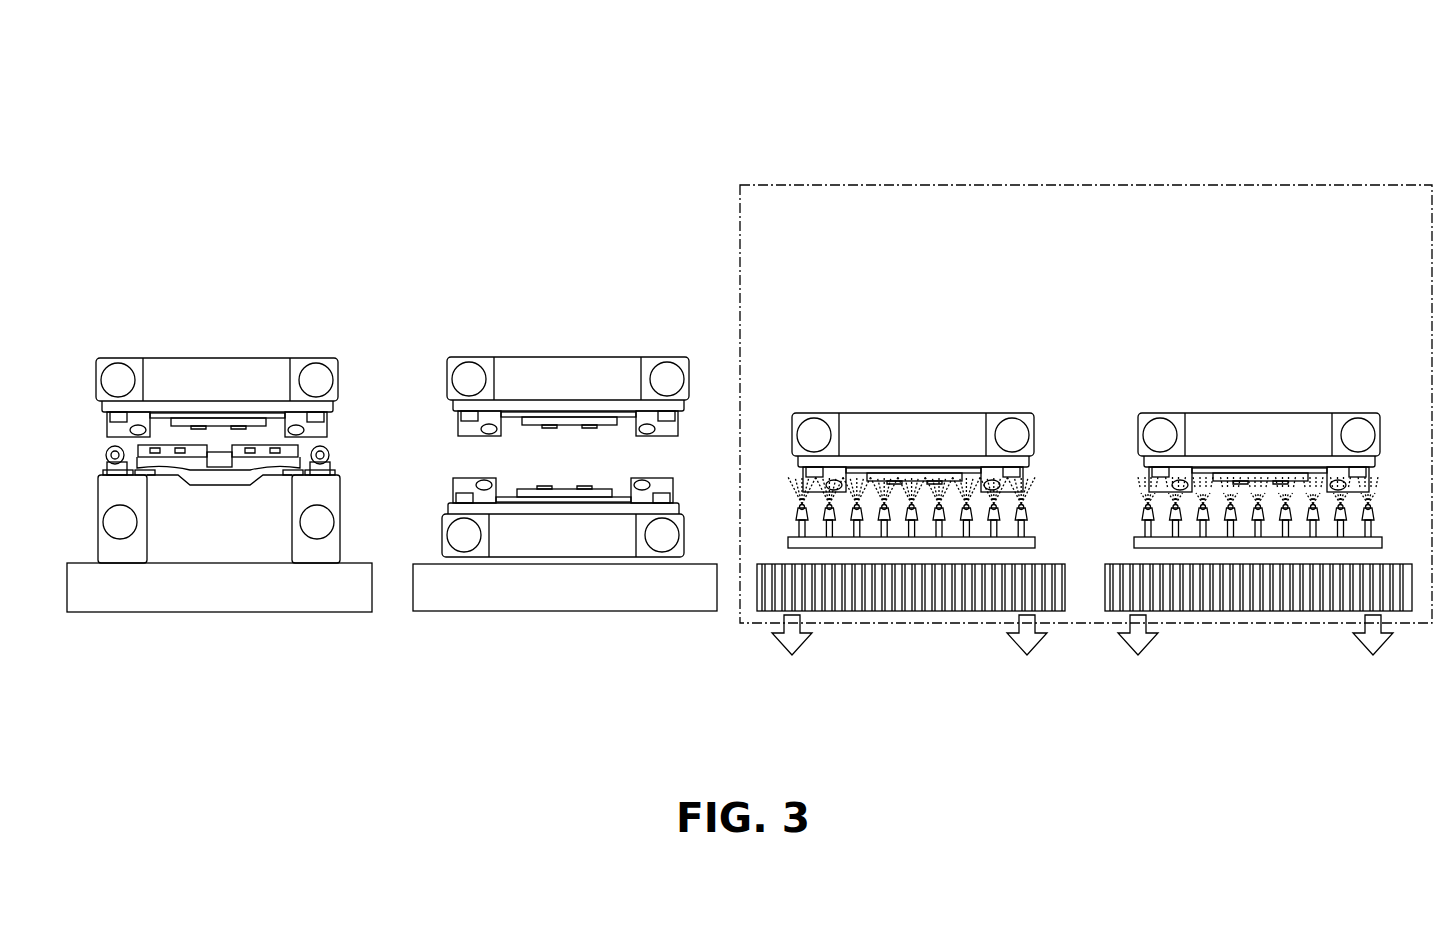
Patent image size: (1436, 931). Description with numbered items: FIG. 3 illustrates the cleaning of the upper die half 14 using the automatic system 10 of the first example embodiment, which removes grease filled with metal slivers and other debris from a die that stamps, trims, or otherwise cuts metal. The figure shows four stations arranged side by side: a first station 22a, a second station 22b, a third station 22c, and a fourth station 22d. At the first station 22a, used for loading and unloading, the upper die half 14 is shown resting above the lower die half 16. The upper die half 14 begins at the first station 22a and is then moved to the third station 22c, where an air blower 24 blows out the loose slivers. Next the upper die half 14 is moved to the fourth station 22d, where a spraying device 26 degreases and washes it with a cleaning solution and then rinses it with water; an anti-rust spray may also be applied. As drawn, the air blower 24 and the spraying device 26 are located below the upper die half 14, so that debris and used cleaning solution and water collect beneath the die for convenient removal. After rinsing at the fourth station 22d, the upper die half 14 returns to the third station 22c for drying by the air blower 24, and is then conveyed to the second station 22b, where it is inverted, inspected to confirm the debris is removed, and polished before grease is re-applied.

The automatic system 10 is at (417, 102).
The upper die half 14 is at (259, 368).
The lower die half 16 is at (328, 497).
The first station 22a is at (273, 612).
The second station 22b is at (437, 612).
The third station 22c is at (850, 611).
The fourth station 22d is at (1163, 611).
The air blower 24 is at (1037, 542).
The spraying device 26 is at (1383, 542).